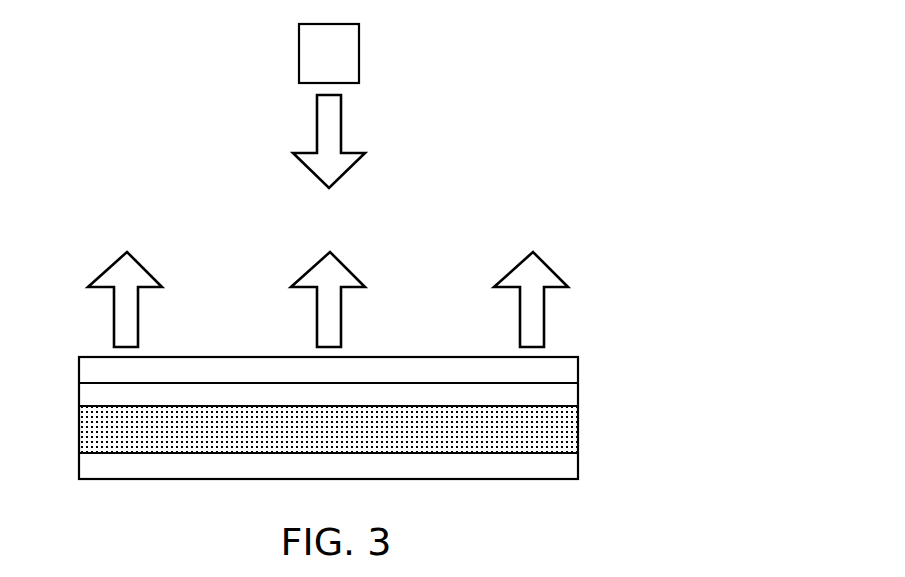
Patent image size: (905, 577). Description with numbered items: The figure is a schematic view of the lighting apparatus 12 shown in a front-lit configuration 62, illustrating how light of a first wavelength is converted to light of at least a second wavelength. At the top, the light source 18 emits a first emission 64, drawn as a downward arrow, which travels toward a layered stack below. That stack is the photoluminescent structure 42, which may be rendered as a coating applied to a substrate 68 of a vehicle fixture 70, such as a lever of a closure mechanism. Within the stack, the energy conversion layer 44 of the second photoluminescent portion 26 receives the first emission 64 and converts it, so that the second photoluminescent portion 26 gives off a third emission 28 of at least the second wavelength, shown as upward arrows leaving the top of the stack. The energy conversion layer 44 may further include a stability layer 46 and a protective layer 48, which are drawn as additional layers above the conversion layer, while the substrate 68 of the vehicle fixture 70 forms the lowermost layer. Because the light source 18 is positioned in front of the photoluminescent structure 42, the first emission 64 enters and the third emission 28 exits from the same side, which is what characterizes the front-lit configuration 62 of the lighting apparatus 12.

The lighting apparatus 12 is at (145, 78).
The light source 18 is at (316, 63).
The second photoluminescent portion 26 is at (92, 430).
The third emission 28 is at (133, 306).
The photoluminescent structure 42 is at (210, 428).
The energy conversion layer 44 is at (568, 428).
The stability layer 46 is at (568, 394).
The protective layer 48 is at (565, 370).
The front-lit configuration 62 is at (503, 39).
The first emission 64 is at (335, 127).
The substrate 68 is at (485, 471).
The vehicle fixture 70 is at (568, 465).